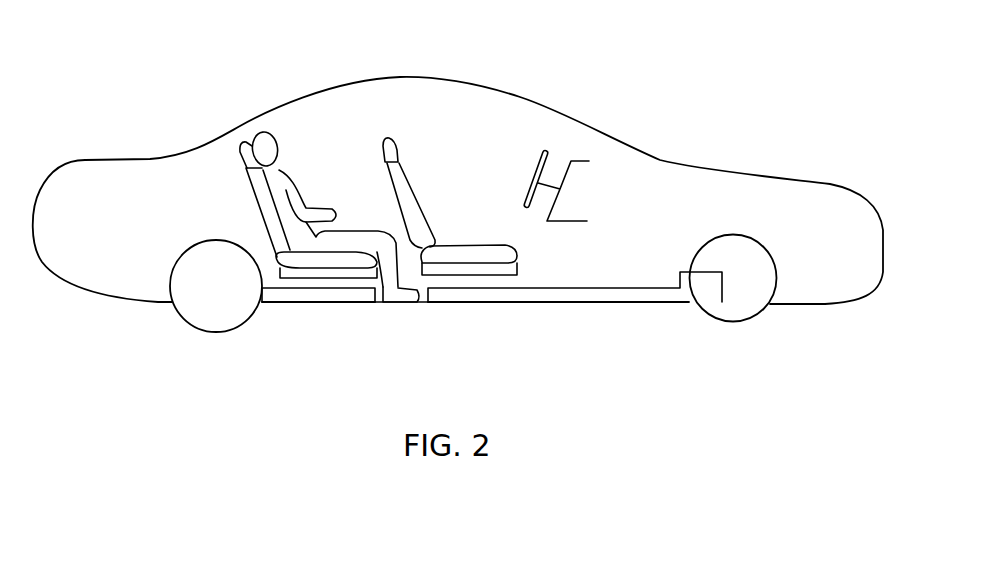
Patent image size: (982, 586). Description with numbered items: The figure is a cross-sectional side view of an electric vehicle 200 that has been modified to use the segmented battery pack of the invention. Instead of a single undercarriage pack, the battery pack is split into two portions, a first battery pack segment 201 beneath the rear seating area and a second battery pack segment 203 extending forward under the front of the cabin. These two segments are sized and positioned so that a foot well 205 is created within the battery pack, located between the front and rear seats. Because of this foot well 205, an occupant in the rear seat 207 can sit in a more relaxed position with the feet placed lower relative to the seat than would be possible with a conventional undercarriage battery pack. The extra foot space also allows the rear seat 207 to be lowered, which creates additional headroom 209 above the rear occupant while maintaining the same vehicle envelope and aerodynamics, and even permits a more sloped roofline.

The vehicle 200 is at (692, 77).
The battery pack segment 201 is at (295, 297).
The battery pack segment 203 is at (528, 297).
The foot well 205 is at (410, 303).
The rear seat 207 is at (258, 228).
The headroom 209 is at (265, 126).